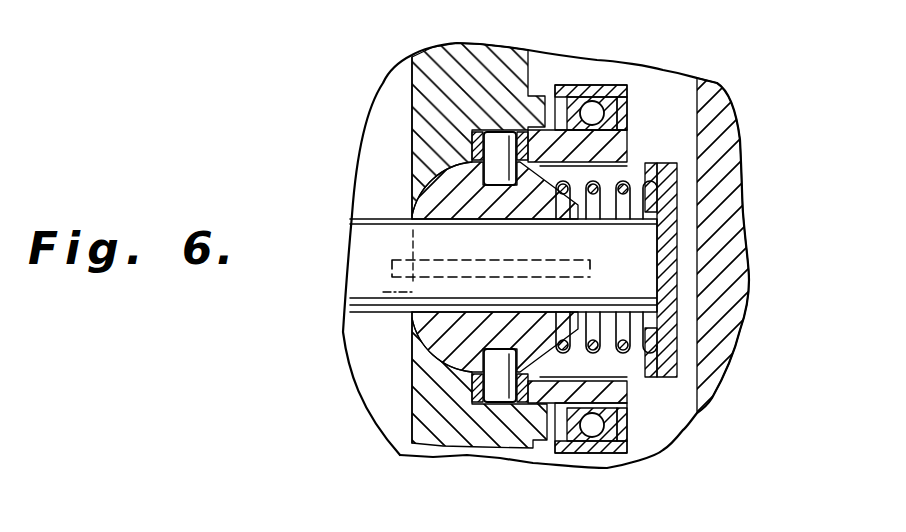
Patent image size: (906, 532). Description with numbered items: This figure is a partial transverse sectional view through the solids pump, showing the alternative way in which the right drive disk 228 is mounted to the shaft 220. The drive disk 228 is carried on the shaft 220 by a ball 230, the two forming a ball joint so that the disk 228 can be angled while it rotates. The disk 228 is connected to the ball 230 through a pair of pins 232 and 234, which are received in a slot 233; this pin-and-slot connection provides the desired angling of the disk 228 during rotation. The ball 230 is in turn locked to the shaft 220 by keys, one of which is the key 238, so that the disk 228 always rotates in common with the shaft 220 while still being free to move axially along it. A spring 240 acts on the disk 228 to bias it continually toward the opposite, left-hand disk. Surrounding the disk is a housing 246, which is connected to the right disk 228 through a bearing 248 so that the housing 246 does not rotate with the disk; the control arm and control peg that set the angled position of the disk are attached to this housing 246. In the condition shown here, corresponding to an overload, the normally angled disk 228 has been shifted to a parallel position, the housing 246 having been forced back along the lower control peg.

The shaft 220 is at (367, 282).
The right drive disk 228 is at (433, 97).
The ball 230 is at (480, 338).
The pin 232 is at (505, 147).
The slot 233 is at (473, 147).
The pin 234 is at (497, 395).
The key 238 is at (593, 275).
The spring 240 is at (713, 188).
The housing 246 is at (603, 87).
The bearing 248 is at (583, 423).